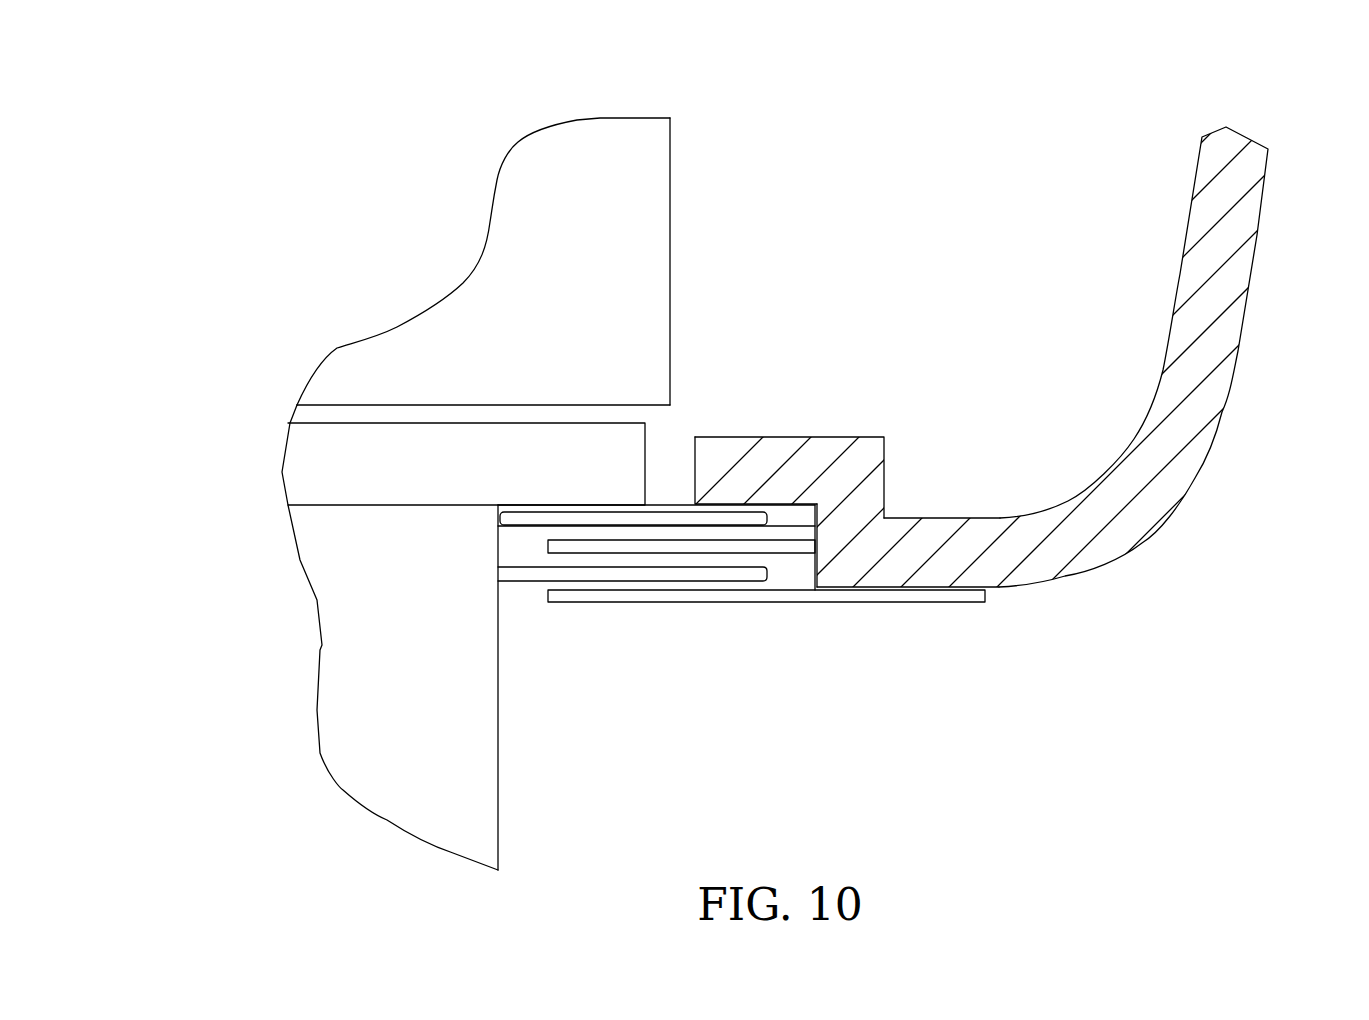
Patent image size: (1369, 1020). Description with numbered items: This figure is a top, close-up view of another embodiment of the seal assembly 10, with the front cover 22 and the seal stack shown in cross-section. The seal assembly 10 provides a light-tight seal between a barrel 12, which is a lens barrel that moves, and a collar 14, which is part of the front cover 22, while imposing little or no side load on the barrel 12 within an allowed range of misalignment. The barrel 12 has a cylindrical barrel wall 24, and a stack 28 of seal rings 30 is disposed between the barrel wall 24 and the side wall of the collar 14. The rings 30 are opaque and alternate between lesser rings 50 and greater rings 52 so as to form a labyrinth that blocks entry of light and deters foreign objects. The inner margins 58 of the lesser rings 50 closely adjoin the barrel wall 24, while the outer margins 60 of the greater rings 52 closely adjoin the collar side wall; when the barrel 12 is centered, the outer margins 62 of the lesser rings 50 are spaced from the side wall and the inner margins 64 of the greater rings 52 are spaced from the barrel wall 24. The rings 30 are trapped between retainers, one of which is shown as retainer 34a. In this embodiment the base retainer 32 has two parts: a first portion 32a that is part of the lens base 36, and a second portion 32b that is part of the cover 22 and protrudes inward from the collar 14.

The seal assembly 10 is at (257, 145).
The barrel 12 is at (320, 650).
The collar 14 is at (818, 568).
The front cover 22 is at (1260, 210).
The barrel wall 24 is at (500, 830).
The stack 28 is at (511, 482).
The seal rings 30 is at (652, 697).
The base retainer 32 is at (603, 316).
The first portion 32a is at (612, 437).
The second portion 32b is at (707, 443).
The substrate 34a is at (665, 600).
The lens base 36 is at (488, 220).
The lesser rings 50 is at (617, 520).
The greater rings 52 is at (562, 550).
The inner margins 58 is at (498, 519).
The outer margins 60 is at (818, 548).
The outer margins 62 is at (767, 520).
The inner margins 64 is at (547, 545).